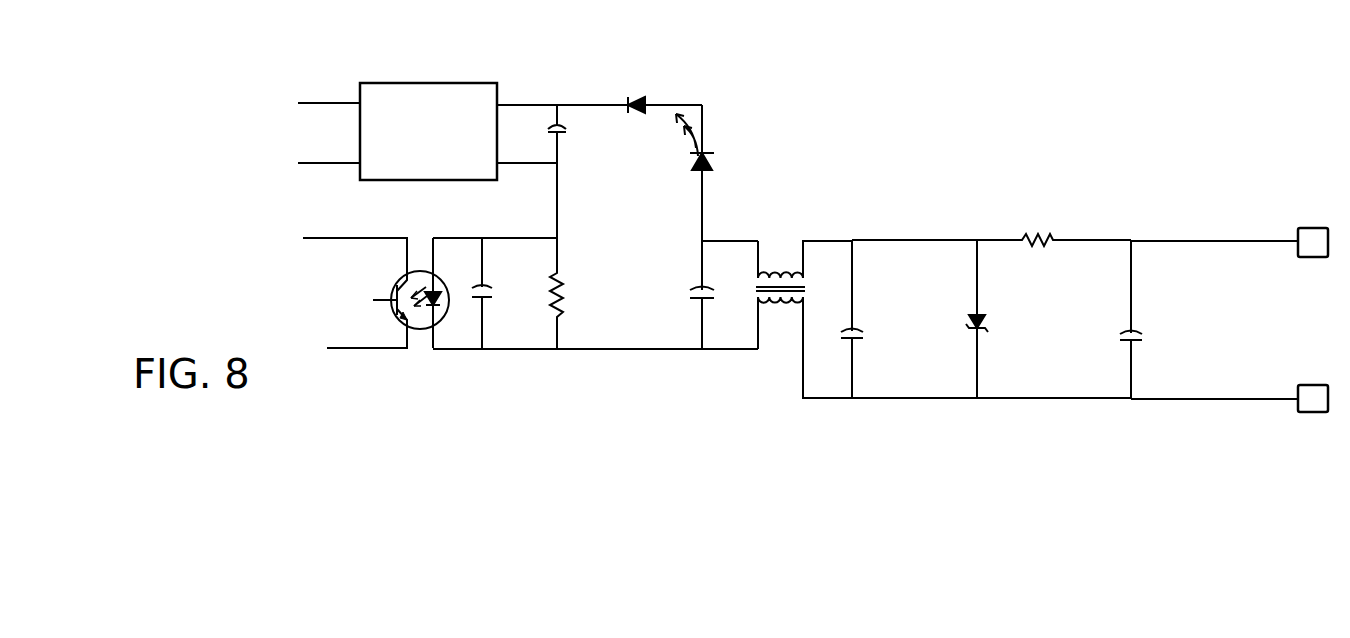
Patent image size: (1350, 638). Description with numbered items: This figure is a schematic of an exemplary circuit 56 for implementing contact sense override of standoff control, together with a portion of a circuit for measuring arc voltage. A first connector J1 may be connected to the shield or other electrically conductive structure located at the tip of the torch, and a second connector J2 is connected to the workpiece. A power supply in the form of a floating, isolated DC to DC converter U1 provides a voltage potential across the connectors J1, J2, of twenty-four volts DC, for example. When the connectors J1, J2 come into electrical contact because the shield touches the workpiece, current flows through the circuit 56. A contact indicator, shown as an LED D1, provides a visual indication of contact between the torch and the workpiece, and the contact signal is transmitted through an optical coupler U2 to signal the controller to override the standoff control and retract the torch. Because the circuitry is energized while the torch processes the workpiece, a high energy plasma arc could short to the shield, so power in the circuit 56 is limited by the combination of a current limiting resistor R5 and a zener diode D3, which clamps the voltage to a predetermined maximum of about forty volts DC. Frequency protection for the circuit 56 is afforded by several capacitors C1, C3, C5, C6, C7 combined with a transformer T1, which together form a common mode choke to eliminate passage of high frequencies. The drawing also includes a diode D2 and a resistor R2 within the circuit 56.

The DC to DC converter U1 is at (427, 113).
The optical coupler U2 is at (377, 309).
The LED D1 is at (681, 173).
The diode D2 is at (629, 87).
The zener diode D3 is at (995, 319).
The capacitor C1 is at (1076, 319).
The capacitor C3 is at (909, 319).
The capacitor C5 is at (495, 293).
The capacitor C6 is at (578, 134).
The capacitor C7 is at (657, 295).
The resistor R2 is at (572, 256).
The current limiting resistor R5 is at (1054, 224).
The transformer T1 is at (804, 293).
The first connector J1 is at (1229, 230).
The second connector J2 is at (1229, 386).
The circuit 56 is at (1172, 98).